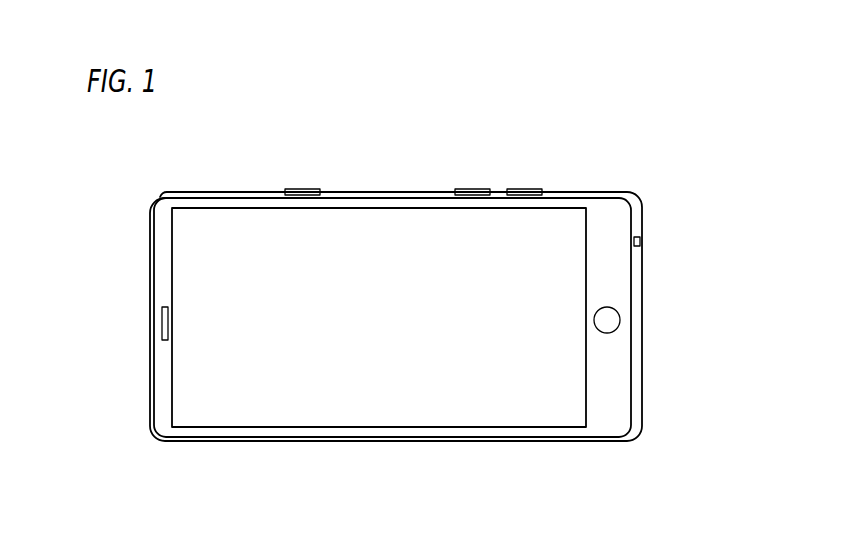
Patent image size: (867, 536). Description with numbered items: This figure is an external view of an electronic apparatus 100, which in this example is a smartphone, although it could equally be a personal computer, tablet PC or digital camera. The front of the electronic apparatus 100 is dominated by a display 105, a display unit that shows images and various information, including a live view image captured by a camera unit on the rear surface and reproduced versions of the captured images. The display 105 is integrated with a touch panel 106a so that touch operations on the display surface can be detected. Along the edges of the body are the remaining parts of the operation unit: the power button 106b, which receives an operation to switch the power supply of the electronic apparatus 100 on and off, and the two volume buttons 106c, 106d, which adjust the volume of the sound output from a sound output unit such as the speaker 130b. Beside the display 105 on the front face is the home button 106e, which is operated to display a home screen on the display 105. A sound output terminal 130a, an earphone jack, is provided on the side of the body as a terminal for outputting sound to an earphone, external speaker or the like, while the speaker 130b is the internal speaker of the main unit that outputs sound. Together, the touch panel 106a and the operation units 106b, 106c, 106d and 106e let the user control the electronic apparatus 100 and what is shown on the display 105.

The electronic apparatus 100 is at (610, 397).
The display 105 is at (366, 268).
The touch panel 106a is at (237, 222).
The power button 106b is at (293, 189).
The volume button 106c is at (463, 190).
The volume button 106d is at (535, 190).
The home button 106e is at (607, 320).
The sound output terminal 130a is at (643, 237).
The speaker 130b is at (162, 318).